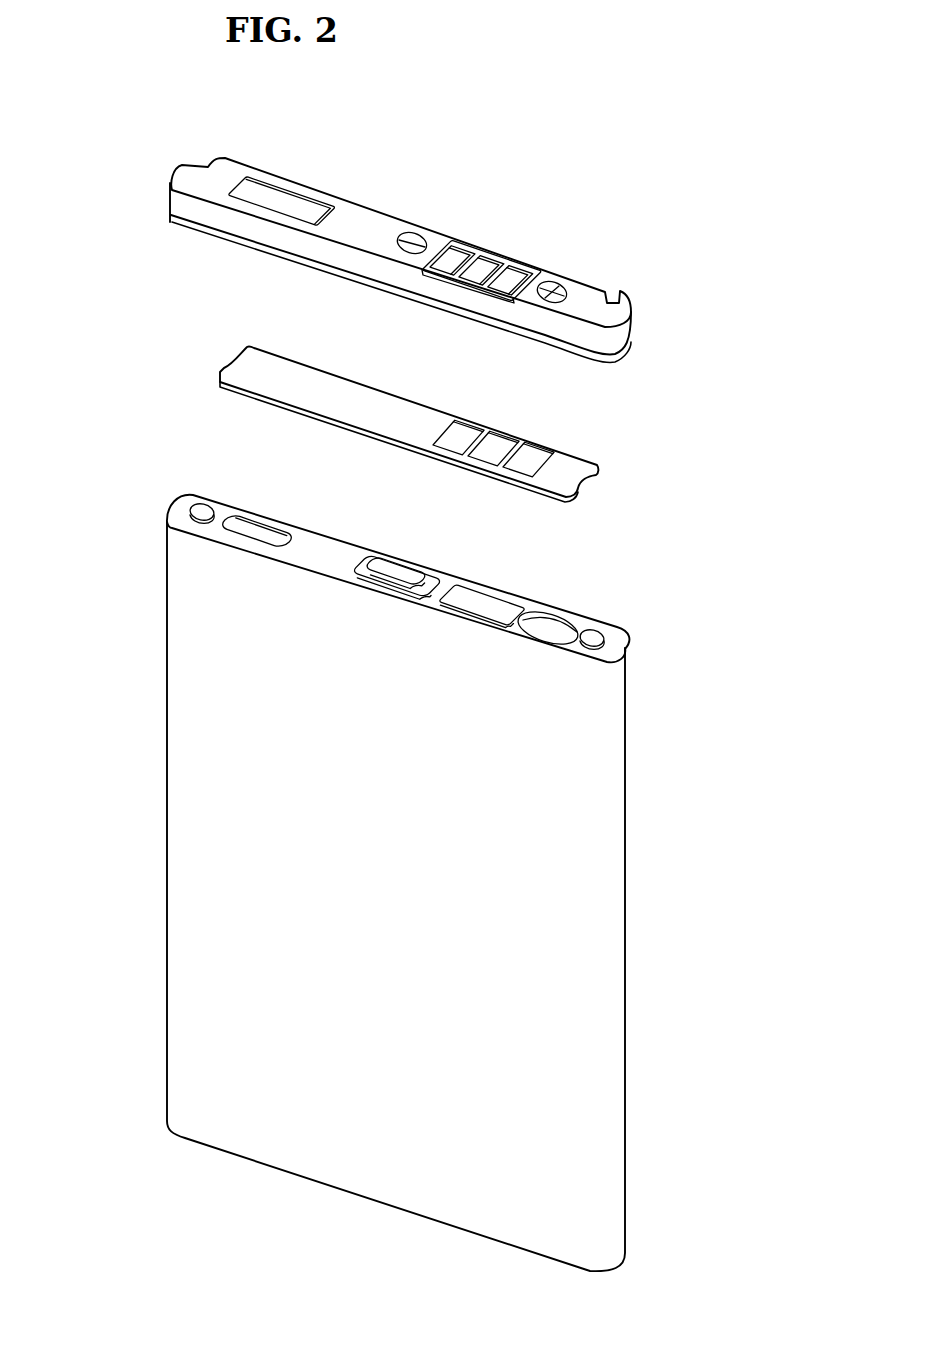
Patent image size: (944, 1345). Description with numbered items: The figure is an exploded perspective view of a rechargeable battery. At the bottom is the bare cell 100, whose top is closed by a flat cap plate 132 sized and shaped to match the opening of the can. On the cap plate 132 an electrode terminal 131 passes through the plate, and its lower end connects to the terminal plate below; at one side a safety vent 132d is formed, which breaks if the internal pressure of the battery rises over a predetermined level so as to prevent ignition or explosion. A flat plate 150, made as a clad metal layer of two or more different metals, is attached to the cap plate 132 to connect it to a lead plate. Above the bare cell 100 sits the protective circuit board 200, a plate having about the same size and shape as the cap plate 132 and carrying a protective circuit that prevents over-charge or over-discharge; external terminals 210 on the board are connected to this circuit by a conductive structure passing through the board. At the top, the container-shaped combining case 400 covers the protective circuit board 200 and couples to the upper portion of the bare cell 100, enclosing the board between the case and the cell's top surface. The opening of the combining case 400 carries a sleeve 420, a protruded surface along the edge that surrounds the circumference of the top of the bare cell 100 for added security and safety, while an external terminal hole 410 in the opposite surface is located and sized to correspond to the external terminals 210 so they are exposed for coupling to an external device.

The bare cell 100 is at (248, 746).
The electrode terminal 131 is at (400, 568).
The cap plate 132 is at (325, 545).
The safety vent 132d is at (255, 530).
The flat plate 150 is at (483, 600).
The protective circuit board 200 is at (250, 370).
The external terminals 210 is at (525, 455).
The combining case 400 is at (193, 178).
The external terminal hole 410 is at (452, 257).
The sleeve 420 is at (170, 213).